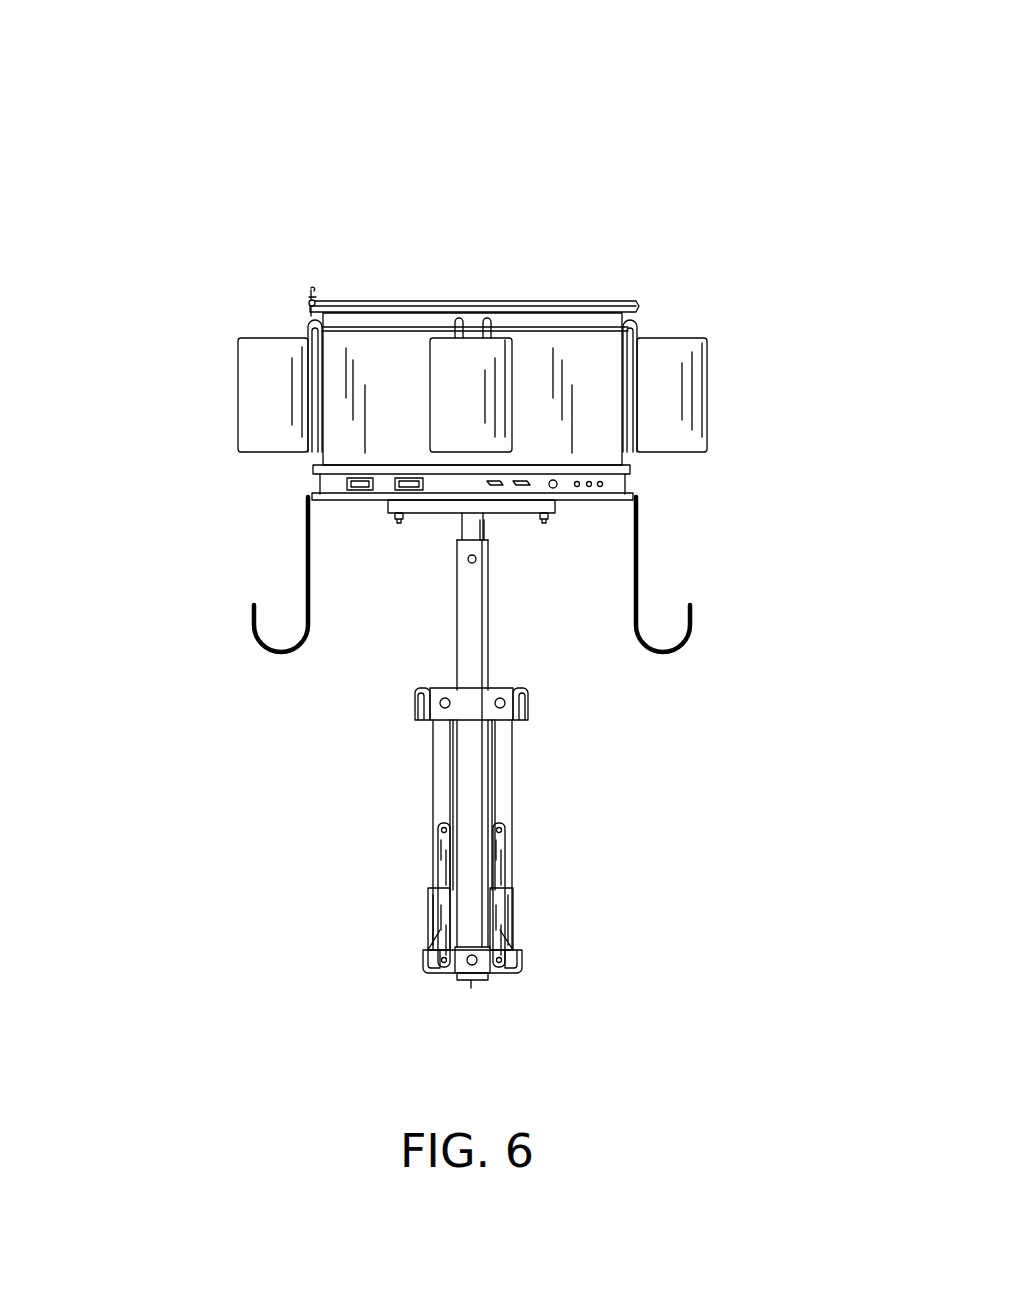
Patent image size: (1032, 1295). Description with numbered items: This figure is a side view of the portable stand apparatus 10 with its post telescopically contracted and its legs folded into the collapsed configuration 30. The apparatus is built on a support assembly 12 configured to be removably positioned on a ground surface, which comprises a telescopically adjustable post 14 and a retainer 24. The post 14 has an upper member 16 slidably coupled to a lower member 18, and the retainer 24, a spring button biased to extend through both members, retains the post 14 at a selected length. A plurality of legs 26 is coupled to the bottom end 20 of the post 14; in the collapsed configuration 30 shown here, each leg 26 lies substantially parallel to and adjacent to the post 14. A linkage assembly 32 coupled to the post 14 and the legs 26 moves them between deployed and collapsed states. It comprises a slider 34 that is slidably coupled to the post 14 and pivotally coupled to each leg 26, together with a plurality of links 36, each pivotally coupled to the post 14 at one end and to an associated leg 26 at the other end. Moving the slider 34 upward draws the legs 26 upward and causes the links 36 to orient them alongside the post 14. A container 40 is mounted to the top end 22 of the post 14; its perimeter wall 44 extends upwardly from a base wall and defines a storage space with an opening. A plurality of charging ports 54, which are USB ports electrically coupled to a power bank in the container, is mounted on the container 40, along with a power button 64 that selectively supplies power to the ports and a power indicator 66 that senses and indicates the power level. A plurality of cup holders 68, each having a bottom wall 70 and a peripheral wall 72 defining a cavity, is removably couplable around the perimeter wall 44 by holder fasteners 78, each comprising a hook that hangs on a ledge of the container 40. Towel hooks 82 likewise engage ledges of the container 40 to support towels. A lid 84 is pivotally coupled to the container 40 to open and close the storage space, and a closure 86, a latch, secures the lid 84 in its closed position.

The portable stand apparatus 10 is at (712, 177).
The support assembly 12 is at (380, 737).
The post 14 is at (440, 656).
The upper member 16 is at (487, 528).
The lower member 18 is at (473, 640).
The bottom end 20 is at (468, 980).
The top end 22 is at (473, 518).
The retainer 24 is at (477, 560).
The legs 26 is at (440, 778).
The collapsed configuration 30 is at (553, 894).
The linkage assembly 32 is at (528, 741).
The slider 34 is at (528, 702).
The links 36 is at (443, 903).
The container 40 is at (635, 286).
The perimeter wall 44 is at (573, 360).
The charging ports 54 is at (347, 484).
The power button 64 is at (555, 488).
The power indicator 66 is at (594, 504).
The cup holders 68 is at (420, 377).
The bottom wall 70 is at (262, 455).
The peripheral wall 72 is at (480, 370).
The holder fasteners 78 is at (471, 306).
The towel hooks 82 is at (262, 647).
The lid 84 is at (355, 298).
The closure 86 is at (308, 296).